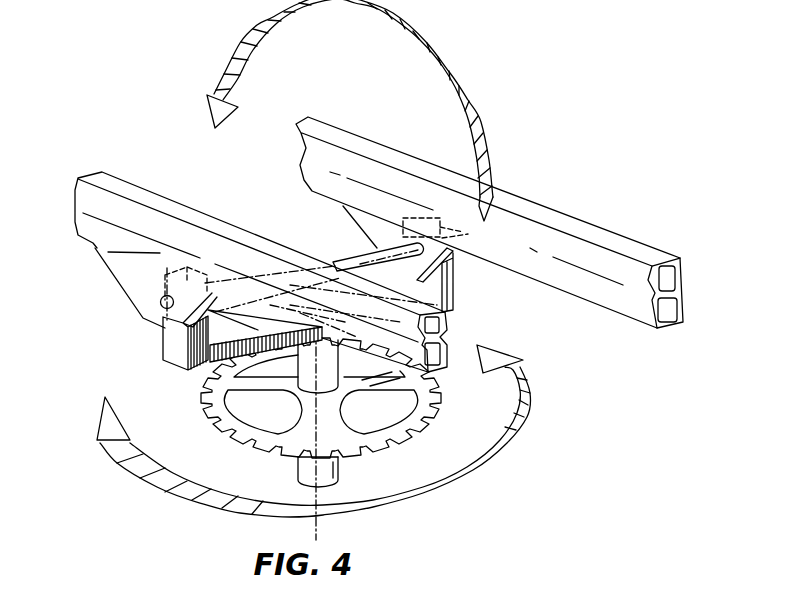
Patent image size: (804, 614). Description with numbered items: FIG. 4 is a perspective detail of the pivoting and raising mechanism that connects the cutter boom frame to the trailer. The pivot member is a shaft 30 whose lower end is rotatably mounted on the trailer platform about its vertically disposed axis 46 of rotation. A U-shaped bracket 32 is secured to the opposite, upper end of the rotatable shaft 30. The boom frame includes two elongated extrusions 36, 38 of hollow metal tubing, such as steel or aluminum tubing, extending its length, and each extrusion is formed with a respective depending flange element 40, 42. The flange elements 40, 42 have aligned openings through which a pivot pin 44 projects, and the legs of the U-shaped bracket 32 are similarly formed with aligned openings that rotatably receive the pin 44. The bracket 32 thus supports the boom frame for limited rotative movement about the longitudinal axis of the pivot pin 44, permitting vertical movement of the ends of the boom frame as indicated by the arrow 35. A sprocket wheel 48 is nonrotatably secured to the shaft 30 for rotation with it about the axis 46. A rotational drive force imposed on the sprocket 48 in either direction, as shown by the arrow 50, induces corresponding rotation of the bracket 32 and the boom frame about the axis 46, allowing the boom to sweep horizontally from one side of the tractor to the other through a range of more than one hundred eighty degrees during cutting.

The shaft 30 is at (323, 473).
The U-shaped bracket 32 is at (178, 352).
The arrow 35 is at (447, 63).
The extrusion 36 is at (160, 250).
The extrusion 38 is at (503, 200).
The flange element 40 is at (142, 298).
The flange element 42 is at (360, 225).
The pivot pin 44 is at (452, 275).
The axis of rotation 46 is at (318, 490).
The sprocket wheel 48 is at (403, 421).
The arrow 50 is at (497, 457).